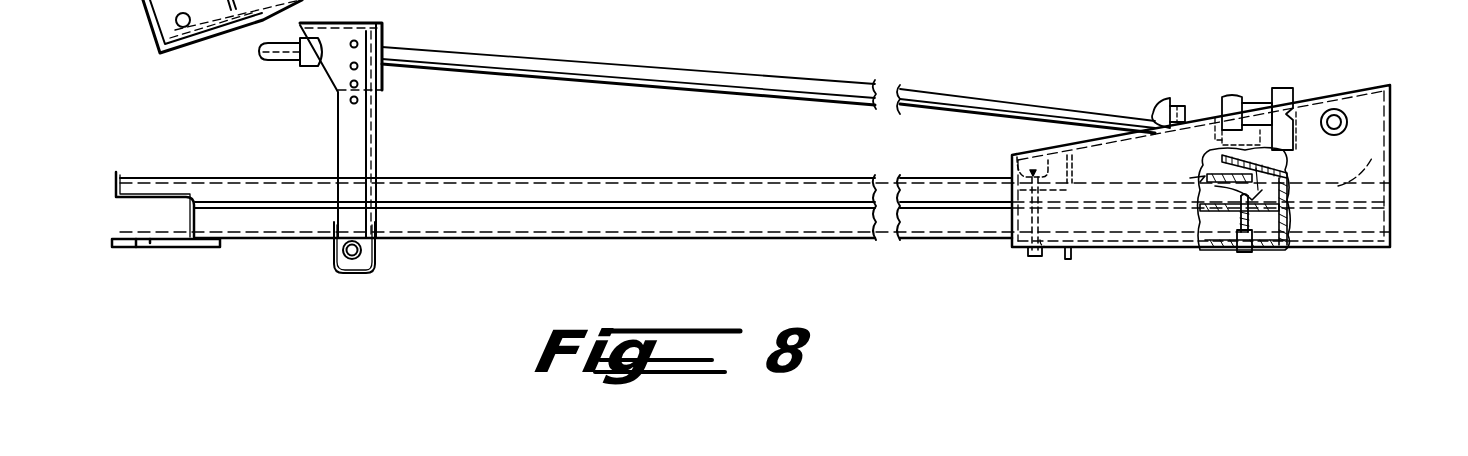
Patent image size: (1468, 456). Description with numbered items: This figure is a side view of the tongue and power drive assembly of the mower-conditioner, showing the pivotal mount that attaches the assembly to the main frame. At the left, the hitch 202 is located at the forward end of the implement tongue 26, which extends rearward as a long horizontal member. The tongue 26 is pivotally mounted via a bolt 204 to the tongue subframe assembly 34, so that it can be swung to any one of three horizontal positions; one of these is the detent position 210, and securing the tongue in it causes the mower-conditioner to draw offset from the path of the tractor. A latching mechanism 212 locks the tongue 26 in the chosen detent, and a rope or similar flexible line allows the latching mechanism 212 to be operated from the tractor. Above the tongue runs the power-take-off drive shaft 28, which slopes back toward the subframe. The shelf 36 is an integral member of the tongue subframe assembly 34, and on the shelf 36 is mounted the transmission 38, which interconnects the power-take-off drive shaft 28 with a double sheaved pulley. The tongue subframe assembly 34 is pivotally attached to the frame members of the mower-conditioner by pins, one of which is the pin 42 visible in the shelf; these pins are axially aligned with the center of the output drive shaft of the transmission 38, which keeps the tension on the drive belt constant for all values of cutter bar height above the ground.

The implement tongue 26 is at (551, 167).
The power-take-off drive shaft 28 is at (975, 96).
The tongue subframe assembly 34 is at (1083, 146).
The shelf 36 is at (1392, 150).
The transmission 38 is at (1285, 108).
The pin 42 is at (1343, 108).
The hitch 202 is at (178, 207).
The bolt 204 is at (1032, 258).
The detent position 210 is at (1258, 252).
The latching mechanism 212 is at (1243, 254).